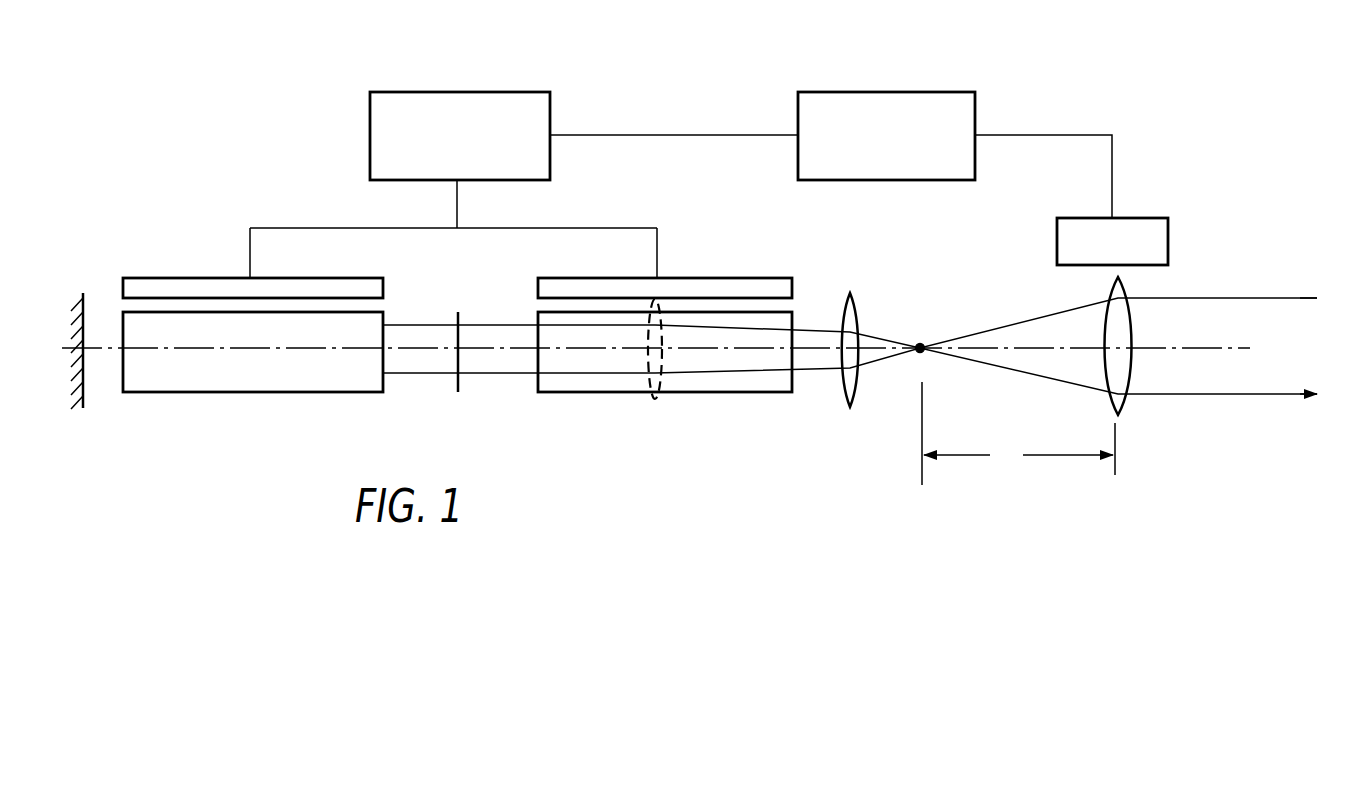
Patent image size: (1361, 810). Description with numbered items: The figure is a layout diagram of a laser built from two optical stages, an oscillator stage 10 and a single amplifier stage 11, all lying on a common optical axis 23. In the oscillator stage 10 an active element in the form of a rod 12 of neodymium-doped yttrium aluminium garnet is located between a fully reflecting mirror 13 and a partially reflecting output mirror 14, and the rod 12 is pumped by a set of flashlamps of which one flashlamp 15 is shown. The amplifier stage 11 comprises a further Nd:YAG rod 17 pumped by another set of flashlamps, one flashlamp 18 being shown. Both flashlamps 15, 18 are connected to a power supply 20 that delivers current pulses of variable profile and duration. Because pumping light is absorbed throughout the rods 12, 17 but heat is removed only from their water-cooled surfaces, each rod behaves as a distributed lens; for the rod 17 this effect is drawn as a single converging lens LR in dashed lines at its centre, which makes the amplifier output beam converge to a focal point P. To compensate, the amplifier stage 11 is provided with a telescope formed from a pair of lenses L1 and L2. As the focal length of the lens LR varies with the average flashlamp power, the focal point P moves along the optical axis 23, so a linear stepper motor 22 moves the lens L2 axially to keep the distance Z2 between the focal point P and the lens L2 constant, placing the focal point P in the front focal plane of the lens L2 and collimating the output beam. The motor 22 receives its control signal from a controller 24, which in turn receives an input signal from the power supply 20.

The oscillator stage 10 is at (253, 359).
The amplifier stage 11 is at (665, 359).
The rod 12 is at (323, 363).
The fully reflecting mirror 13 is at (85, 375).
The partially reflecting output mirror 14 is at (460, 383).
The flashlamp 15 is at (192, 288).
The rod 17 is at (745, 383).
The flashlamp 18 is at (747, 288).
The power supply 20 is at (462, 100).
The linear stepper motor 22 is at (1168, 217).
The optical axis 23 is at (1230, 350).
The controller 24 is at (875, 98).
The thermally induced lens LR is at (653, 400).
The lens L1 is at (848, 400).
The lens L2 is at (1115, 407).
The focal point P is at (923, 353).
The distance Z2 is at (1018, 433).